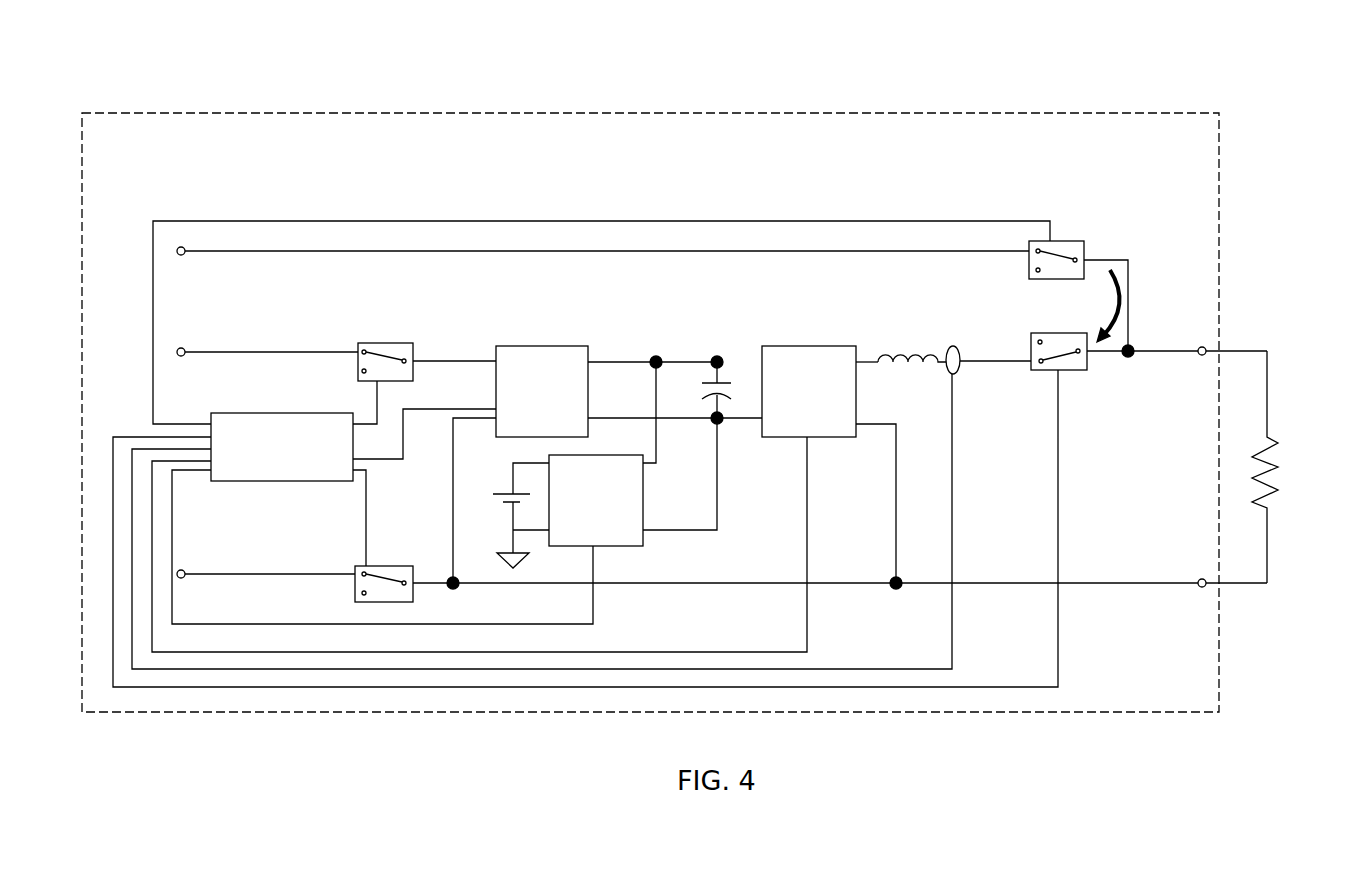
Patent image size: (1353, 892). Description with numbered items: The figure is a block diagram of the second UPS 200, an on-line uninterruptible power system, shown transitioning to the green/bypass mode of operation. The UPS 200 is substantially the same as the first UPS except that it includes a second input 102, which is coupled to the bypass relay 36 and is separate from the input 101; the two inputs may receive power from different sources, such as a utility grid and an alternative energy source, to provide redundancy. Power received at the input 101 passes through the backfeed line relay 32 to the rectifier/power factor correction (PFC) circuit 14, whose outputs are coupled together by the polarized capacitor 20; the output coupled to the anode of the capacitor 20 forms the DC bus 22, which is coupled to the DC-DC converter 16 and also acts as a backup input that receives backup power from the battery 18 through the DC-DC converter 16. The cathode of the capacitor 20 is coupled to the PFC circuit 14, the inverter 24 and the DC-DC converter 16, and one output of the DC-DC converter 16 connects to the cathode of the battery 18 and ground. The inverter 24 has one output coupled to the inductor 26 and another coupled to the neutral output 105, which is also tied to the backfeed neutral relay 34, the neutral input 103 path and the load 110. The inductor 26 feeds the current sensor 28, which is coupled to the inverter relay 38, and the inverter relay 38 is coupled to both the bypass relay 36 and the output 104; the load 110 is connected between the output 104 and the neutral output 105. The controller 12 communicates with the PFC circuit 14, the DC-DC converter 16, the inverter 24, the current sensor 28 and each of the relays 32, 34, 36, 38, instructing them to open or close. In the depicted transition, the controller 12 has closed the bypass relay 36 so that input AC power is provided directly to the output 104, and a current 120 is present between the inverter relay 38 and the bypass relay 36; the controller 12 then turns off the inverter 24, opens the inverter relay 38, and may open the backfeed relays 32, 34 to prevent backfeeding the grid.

The second UPS 200 is at (1208, 113).
The controller 12 is at (211, 481).
The rectifier/power factor correction (PFC) circuit 14 is at (496, 372).
The DC-DC converter 16 is at (643, 513).
The battery 18 is at (511, 490).
The polarized capacitor 20 is at (705, 381).
The DC bus 22 is at (697, 360).
The inverter 24 is at (797, 346).
The inductor 26 is at (925, 350).
The current sensor 28 is at (958, 372).
The backfeed line relay 32 is at (412, 343).
The backfeed neutral relay 34 is at (374, 566).
The bypass relay 36 is at (1083, 241).
The inverter relay 38 is at (1056, 333).
The input 101 is at (182, 348).
The second input 102 is at (183, 255).
The neutral input 103 is at (182, 570).
The output 104 is at (1200, 347).
The neutral output 105 is at (1200, 579).
The load 110 is at (1273, 467).
The current 120 is at (1118, 318).